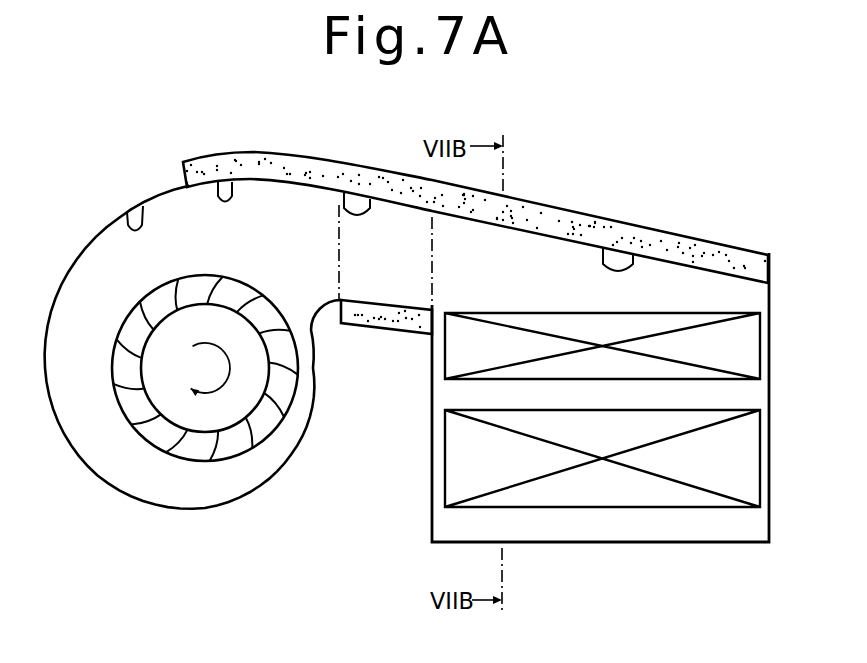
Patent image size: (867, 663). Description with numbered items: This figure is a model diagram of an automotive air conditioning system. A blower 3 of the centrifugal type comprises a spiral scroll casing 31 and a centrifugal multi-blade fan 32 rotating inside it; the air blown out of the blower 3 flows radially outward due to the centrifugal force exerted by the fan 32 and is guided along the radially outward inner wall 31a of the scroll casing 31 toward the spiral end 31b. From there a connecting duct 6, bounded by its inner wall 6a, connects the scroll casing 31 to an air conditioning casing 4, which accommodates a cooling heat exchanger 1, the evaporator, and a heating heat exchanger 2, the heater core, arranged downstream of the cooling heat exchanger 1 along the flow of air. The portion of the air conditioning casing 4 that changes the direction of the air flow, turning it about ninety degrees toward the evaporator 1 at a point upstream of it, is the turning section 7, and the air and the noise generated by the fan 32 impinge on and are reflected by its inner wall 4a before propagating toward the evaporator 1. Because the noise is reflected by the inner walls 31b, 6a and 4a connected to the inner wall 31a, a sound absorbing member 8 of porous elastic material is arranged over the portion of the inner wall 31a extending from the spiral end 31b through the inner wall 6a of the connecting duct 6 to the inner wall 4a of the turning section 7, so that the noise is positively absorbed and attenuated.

The cooling heat exchanger 1 is at (752, 357).
The heating heat exchanger 2 is at (752, 458).
The blower 3 is at (76, 255).
The scroll casing 31 is at (95, 478).
The inner wall 31a is at (132, 211).
The spiral end 31b is at (221, 180).
The centrifugal multi-blade fan 32 is at (260, 432).
The air conditioning casing 4 is at (774, 294).
The inner wall 4a is at (633, 262).
The connecting duct 6 is at (406, 243).
The inner wall 6a is at (352, 192).
The turning section 7 is at (561, 258).
The sound absorbing member 8 is at (281, 168).